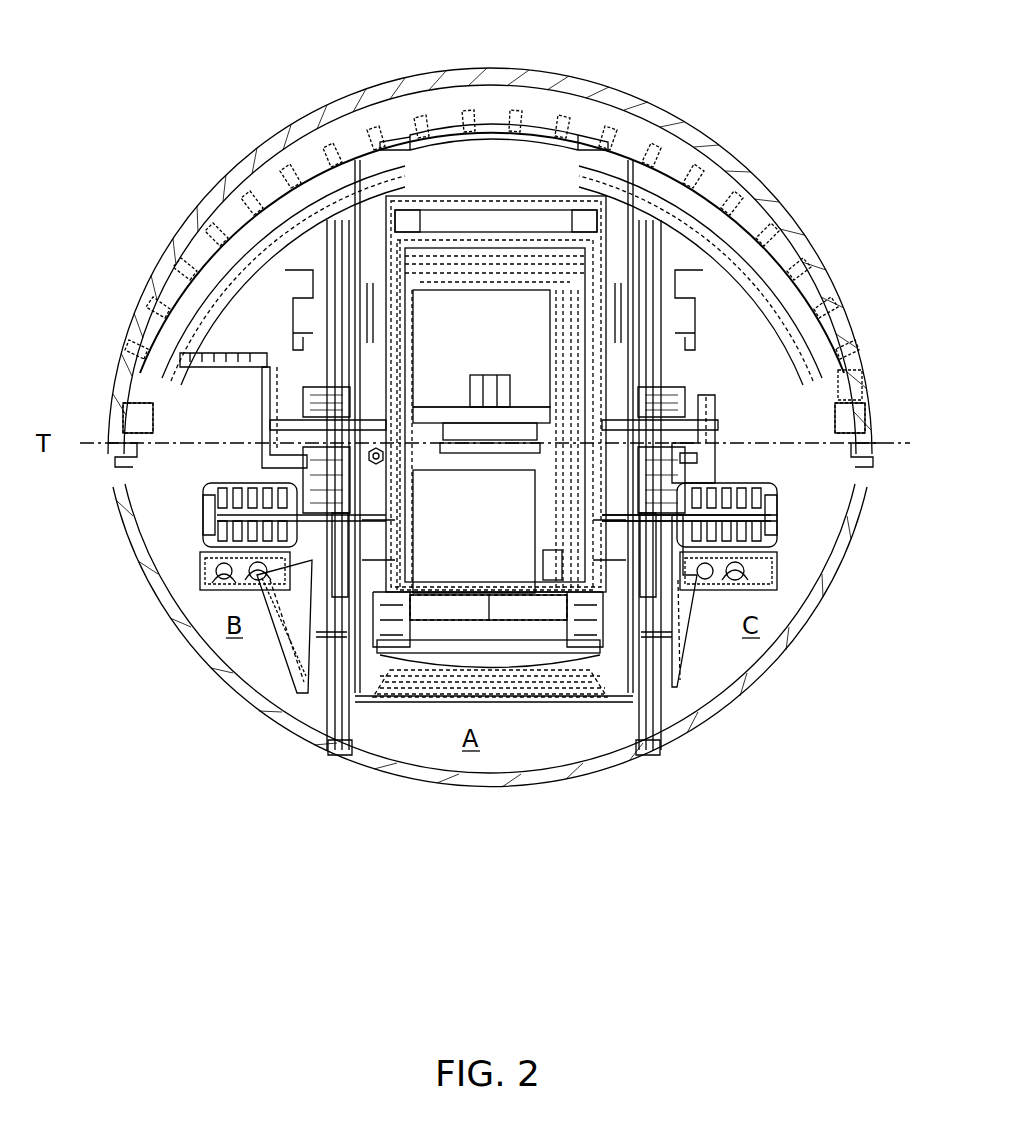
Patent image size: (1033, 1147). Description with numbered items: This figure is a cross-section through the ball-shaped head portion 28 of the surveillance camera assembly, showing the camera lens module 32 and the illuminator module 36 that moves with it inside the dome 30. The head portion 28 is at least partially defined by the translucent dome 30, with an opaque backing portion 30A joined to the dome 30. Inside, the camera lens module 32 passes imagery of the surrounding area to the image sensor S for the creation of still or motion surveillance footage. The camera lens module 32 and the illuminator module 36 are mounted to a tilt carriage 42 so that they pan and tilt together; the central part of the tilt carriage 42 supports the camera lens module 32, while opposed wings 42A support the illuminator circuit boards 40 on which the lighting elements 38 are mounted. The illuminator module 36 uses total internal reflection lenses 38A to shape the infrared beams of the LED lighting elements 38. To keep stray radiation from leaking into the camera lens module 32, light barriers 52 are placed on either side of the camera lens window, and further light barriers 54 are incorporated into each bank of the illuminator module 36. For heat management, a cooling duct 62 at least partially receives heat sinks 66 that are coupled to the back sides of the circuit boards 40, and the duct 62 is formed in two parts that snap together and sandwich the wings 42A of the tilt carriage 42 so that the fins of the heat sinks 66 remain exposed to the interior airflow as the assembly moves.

The head portion 28 is at (800, 123).
The dome 30 is at (413, 780).
The backing portion 30A is at (217, 183).
The camera lens module 32 is at (518, 637).
The illuminator module 36 is at (302, 450).
The lighting elements 38 is at (203, 570).
The total internal reflection lenses 38A is at (293, 651).
The illuminator circuit boards 40 is at (203, 553).
The tilt carriage 42 is at (720, 450).
The wings 42A is at (297, 487).
The light barriers 52 is at (343, 747).
The light barriers 54 is at (302, 666).
The cooling duct 62 is at (203, 507).
The heat sinks 66 is at (770, 532).
The image sensor S is at (503, 232).